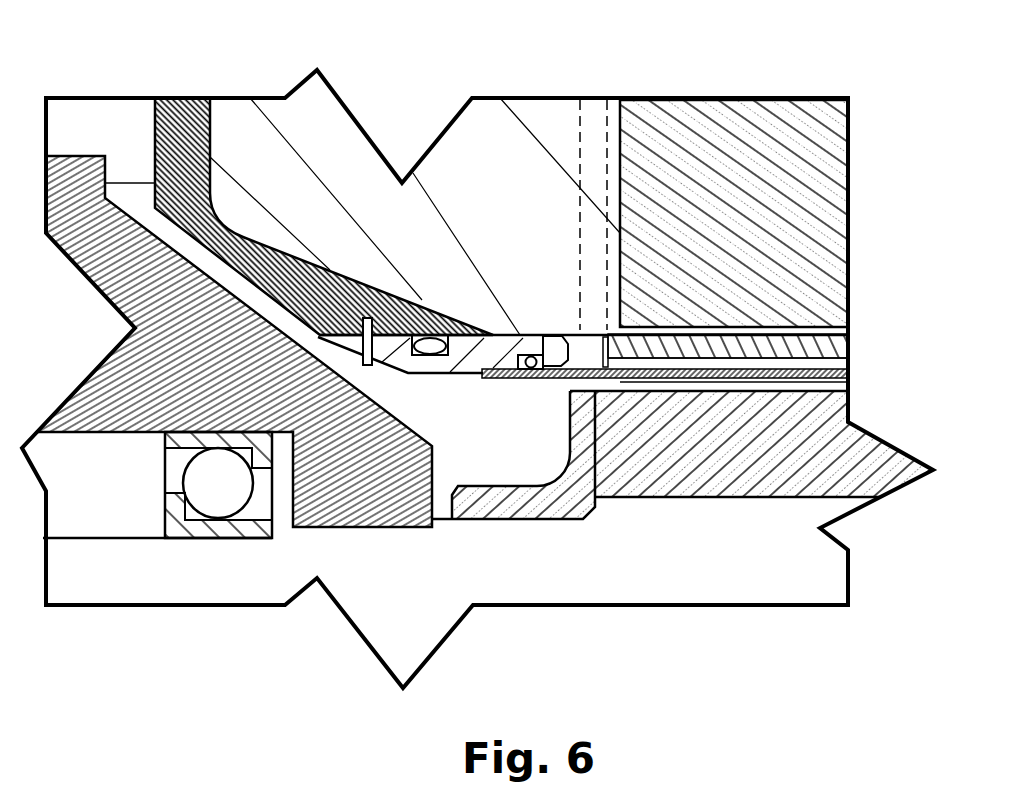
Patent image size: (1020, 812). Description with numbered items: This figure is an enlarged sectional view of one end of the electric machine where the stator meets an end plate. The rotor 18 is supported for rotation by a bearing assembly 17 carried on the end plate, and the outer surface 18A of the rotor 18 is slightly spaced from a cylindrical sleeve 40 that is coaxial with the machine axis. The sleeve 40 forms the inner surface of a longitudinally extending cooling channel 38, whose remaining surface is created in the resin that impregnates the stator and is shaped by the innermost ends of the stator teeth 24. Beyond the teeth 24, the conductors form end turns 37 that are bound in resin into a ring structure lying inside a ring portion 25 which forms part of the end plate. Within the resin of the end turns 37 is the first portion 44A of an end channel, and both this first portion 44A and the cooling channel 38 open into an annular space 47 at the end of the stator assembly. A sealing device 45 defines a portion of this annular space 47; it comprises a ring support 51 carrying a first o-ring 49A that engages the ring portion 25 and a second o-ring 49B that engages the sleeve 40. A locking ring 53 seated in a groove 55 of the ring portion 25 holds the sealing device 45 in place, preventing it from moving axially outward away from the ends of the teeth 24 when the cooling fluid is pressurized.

The bearing assembly 17 is at (233, 540).
The rotor 18 is at (537, 519).
The outer surface of the rotor 18A is at (730, 390).
The stator teeth 24 is at (607, 337).
The ring portion 25 is at (344, 305).
The end turns 37 is at (427, 183).
The cooling channel 38 is at (623, 364).
The sleeve 40 is at (675, 369).
The first portion of end channel 44A is at (580, 143).
The sealing device 45 is at (452, 406).
The annular space 47 is at (592, 367).
The first o-ring 49A is at (424, 336).
The second o-ring 49B is at (520, 356).
The ring support 51 is at (553, 346).
The locking ring 53 is at (362, 353).
The groove 55 is at (370, 318).